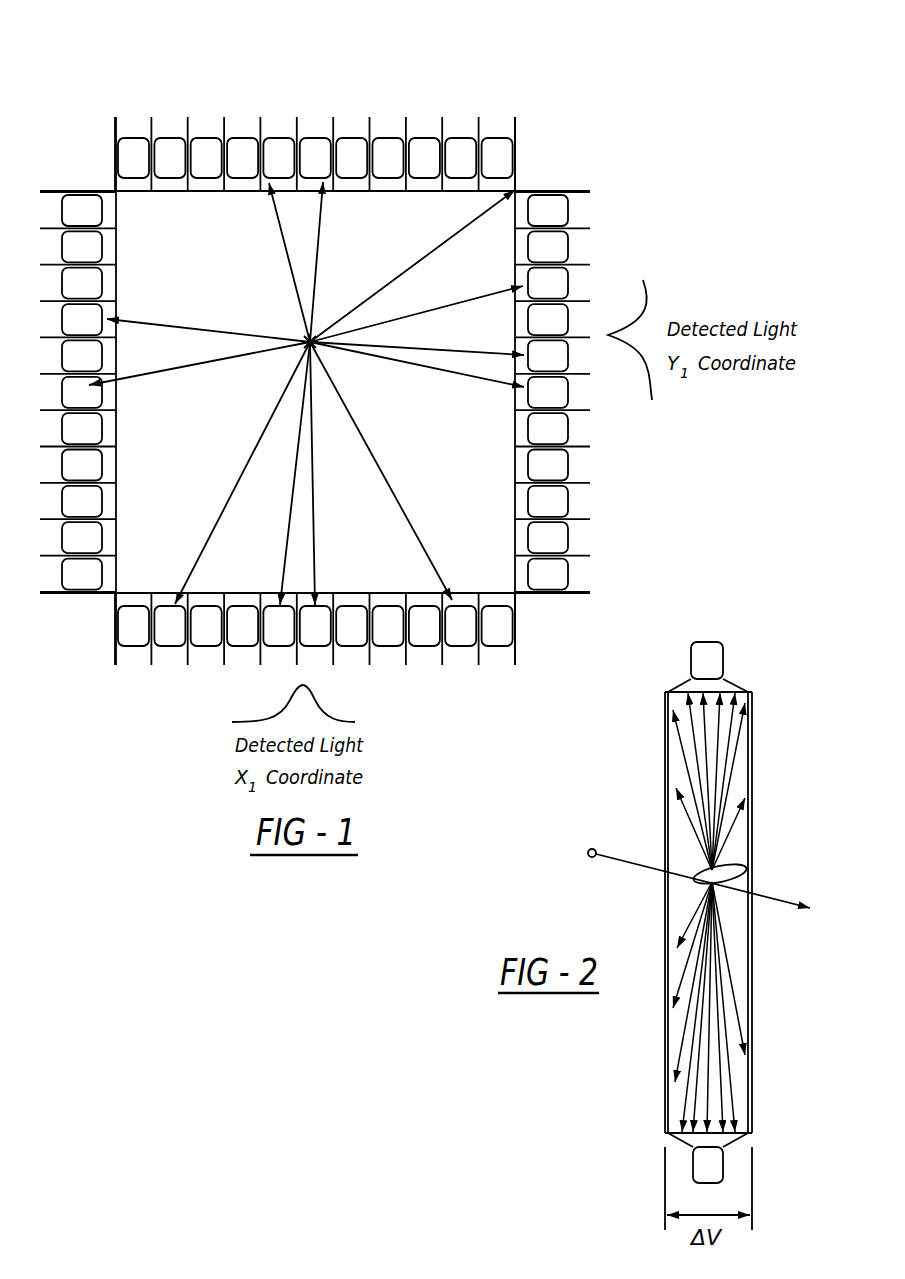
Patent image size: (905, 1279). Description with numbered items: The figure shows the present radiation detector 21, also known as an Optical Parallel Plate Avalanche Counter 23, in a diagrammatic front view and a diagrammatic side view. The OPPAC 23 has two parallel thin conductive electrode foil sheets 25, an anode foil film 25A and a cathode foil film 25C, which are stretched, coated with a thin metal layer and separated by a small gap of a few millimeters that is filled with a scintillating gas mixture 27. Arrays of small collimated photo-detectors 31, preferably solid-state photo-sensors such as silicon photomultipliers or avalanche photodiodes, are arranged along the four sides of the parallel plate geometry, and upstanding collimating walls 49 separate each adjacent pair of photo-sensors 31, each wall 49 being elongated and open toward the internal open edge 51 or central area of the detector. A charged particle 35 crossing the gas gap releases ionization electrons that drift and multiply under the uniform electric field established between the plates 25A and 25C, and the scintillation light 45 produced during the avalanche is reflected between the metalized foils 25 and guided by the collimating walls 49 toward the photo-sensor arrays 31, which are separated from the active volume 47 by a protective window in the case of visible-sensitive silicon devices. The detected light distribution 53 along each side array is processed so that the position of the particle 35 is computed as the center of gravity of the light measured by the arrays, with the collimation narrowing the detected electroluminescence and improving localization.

In FIG. 1, the radiation detector 21 is at (362, 374).
In FIG. 2, the radiation detector 21 is at (712, 850).
In FIG. 1, the Optical Parallel Plate Avalanche Counter 23 is at (330, 391).
In FIG. 2, the Optical Parallel Plate Avalanche Counter 23 is at (712, 911).
In FIG. 1, the electrode foil sheets 25 is at (170, 536).
In FIG. 2, the anode foil film 25A is at (668, 1063).
In FIG. 2, the cathode foil film 25C is at (753, 1063).
In FIG. 2, the scintillating gas mixture 27 is at (675, 888).
In FIG. 1, the photo-detectors 31 is at (280, 155).
In FIG. 2, the photo-detectors 31 is at (708, 655).
In FIG. 1, the charged particle 35 is at (306, 344).
In FIG. 2, the charged particle 35 is at (590, 850).
In FIG. 1, the scintillation light 45 is at (170, 322).
In FIG. 2, the scintillation light 45 is at (677, 817).
In FIG. 1, the active volume 47 is at (373, 218).
In FIG. 1, the collimating walls 49 is at (115, 128).
In FIG. 1, the internal open edge 51 is at (343, 596).
In FIG. 2, the internal open edge 51 is at (670, 700).
In FIG. 1, the detected light distribution 53 is at (620, 288).